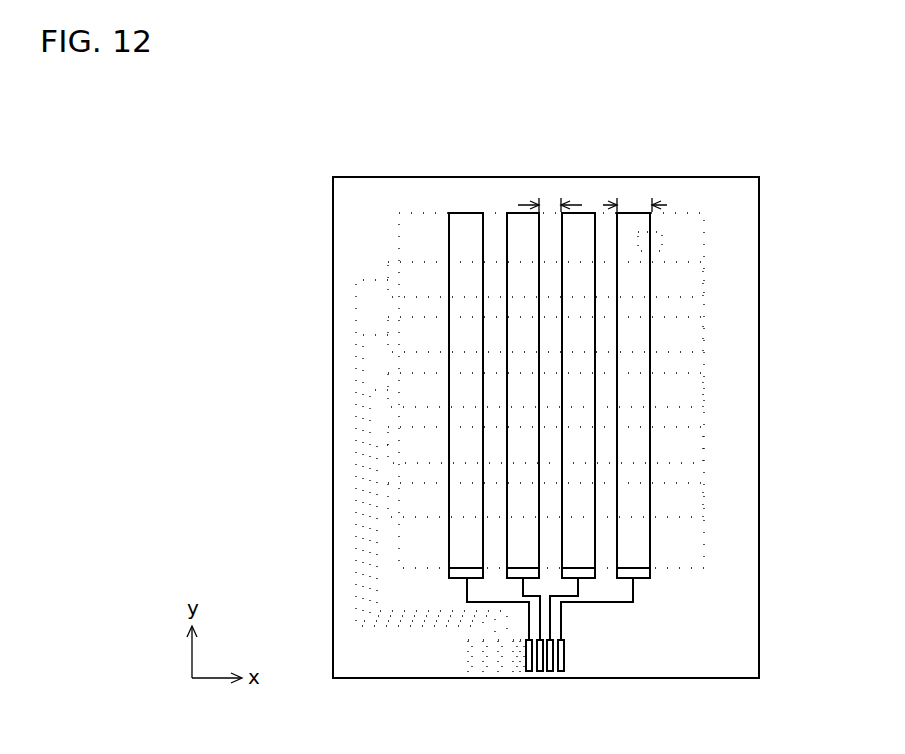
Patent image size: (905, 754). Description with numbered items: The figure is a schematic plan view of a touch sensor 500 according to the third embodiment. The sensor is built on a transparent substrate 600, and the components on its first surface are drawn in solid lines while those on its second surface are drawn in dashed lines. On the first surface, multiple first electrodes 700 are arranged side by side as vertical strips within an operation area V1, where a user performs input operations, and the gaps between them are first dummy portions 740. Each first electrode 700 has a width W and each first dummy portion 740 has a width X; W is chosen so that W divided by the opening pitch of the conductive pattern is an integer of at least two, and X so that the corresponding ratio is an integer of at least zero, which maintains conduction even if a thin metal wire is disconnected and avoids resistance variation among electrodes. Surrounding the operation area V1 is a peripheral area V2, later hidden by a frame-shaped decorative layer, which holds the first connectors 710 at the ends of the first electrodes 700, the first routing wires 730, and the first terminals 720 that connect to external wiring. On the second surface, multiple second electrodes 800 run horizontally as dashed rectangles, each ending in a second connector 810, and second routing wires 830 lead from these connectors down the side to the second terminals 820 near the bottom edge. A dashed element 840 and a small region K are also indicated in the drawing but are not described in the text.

The touch sensor 500 is at (551, 392).
The transparent substrate 600 is at (742, 483).
The first electrode 700 is at (466, 222).
The first connector 710 is at (638, 573).
The first terminal 720 is at (582, 657).
The first routing wire 730 is at (633, 592).
The first dummy portion 740 is at (495, 224).
The second electrode 800 is at (413, 272).
The second connector 810 is at (397, 437).
The second terminal 820 is at (462, 657).
The second routing wire 830 is at (357, 475).
The drive electrode 840 is at (413, 310).
The operation area V1 is at (705, 226).
The peripheral area V2 is at (705, 190).
The unit area K is at (663, 242).
The width of the first dummy portions X is at (550, 196).
The width of the first electrodes W is at (635, 196).